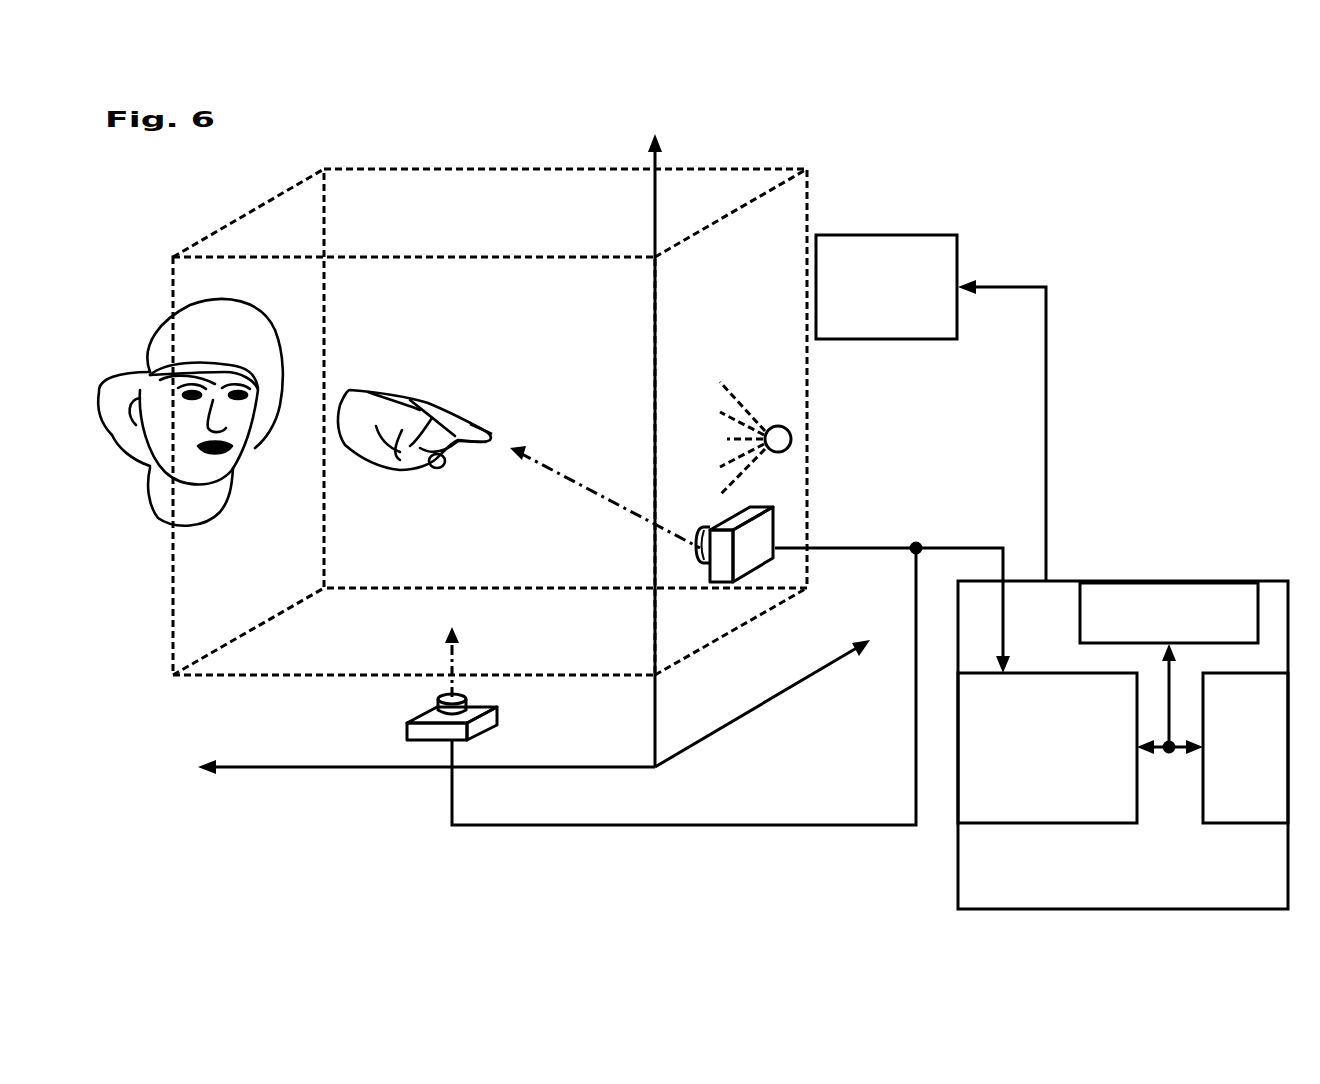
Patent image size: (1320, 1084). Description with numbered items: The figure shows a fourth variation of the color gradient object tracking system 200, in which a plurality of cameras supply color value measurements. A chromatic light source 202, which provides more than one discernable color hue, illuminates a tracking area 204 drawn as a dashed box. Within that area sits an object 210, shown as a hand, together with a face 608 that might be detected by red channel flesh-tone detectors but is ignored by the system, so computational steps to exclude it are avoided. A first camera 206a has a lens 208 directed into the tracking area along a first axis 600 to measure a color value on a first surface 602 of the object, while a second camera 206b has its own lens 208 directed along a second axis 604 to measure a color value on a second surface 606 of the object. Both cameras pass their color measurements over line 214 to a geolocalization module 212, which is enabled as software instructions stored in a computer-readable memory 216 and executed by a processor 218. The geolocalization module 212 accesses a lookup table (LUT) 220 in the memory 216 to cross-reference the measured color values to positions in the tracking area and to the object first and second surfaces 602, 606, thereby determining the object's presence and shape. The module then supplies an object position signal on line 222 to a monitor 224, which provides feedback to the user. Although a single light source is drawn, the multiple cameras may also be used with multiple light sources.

The system 200 is at (256, 168).
The tracking area 204 is at (622, 167).
The chromatic light source 202 is at (800, 436).
The first camera 206a is at (752, 537).
The second camera 206b is at (405, 728).
The lens 208 is at (700, 548).
The object 210 is at (390, 399).
The geolocalization module 212 is at (1080, 748).
The line 214 is at (862, 552).
The memory 216 is at (1123, 745).
The processor 218 is at (1169, 665).
The lookup table (LUT) 220 is at (1245, 748).
The line 222 is at (1046, 447).
The monitor 224 is at (886, 287).
The first axis 600 is at (655, 536).
The first surface 602 is at (492, 437).
The second axis 604 is at (447, 663).
The second surface 606 is at (463, 444).
The face 608 is at (235, 455).